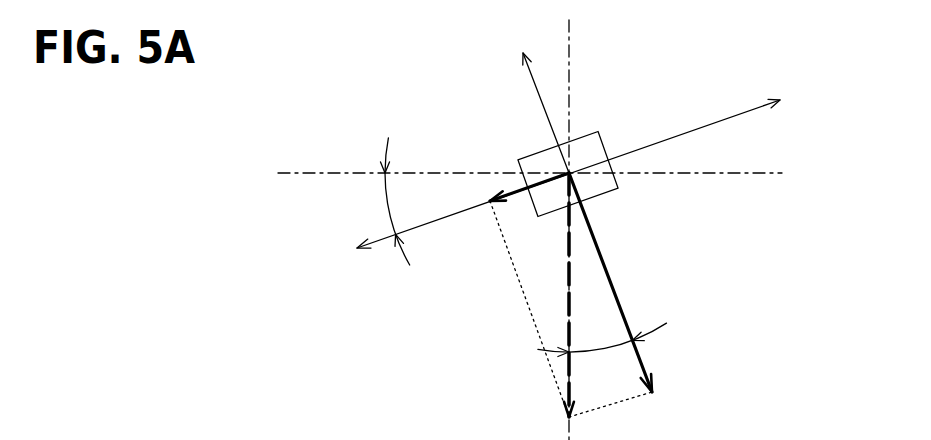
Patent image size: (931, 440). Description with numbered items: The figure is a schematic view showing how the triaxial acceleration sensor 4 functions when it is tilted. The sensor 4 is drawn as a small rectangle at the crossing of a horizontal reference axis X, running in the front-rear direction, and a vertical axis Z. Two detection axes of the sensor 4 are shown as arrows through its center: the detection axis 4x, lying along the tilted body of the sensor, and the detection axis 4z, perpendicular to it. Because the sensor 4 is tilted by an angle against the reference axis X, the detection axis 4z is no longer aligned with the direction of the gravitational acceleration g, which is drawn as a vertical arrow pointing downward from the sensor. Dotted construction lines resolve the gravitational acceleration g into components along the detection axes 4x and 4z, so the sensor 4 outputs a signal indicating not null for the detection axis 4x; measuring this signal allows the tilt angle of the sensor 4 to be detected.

The triaxial acceleration sensor 4 is at (590, 134).
The detection axis 4x is at (387, 243).
The detection axis 4z is at (535, 90).
The reference axis X is at (360, 172).
The vertical reference axis Z is at (570, 82).
The gravitational acceleration g is at (568, 303).